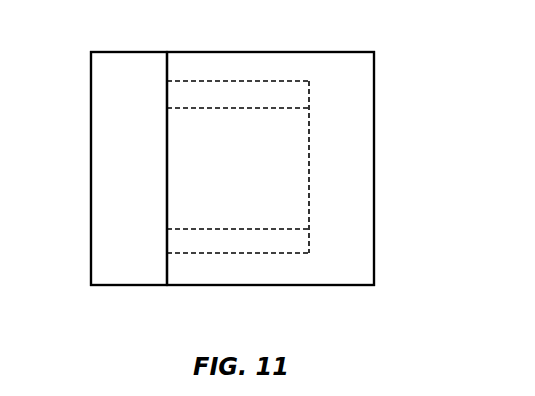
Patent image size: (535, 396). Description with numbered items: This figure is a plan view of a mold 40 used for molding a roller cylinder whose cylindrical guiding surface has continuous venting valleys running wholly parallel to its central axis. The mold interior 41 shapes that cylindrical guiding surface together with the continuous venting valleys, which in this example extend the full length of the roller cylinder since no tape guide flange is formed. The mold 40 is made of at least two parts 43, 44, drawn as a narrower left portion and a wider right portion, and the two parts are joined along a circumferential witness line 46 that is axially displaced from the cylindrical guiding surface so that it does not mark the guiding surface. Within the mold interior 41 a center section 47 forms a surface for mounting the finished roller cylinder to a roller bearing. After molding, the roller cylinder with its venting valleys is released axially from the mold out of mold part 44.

The mold 40 is at (439, 111).
The mold interior 41 is at (216, 83).
The mold part 43 is at (91, 82).
The mold part 44 is at (374, 162).
The circumferential witness line 46 is at (167, 276).
The center section 47 is at (277, 229).